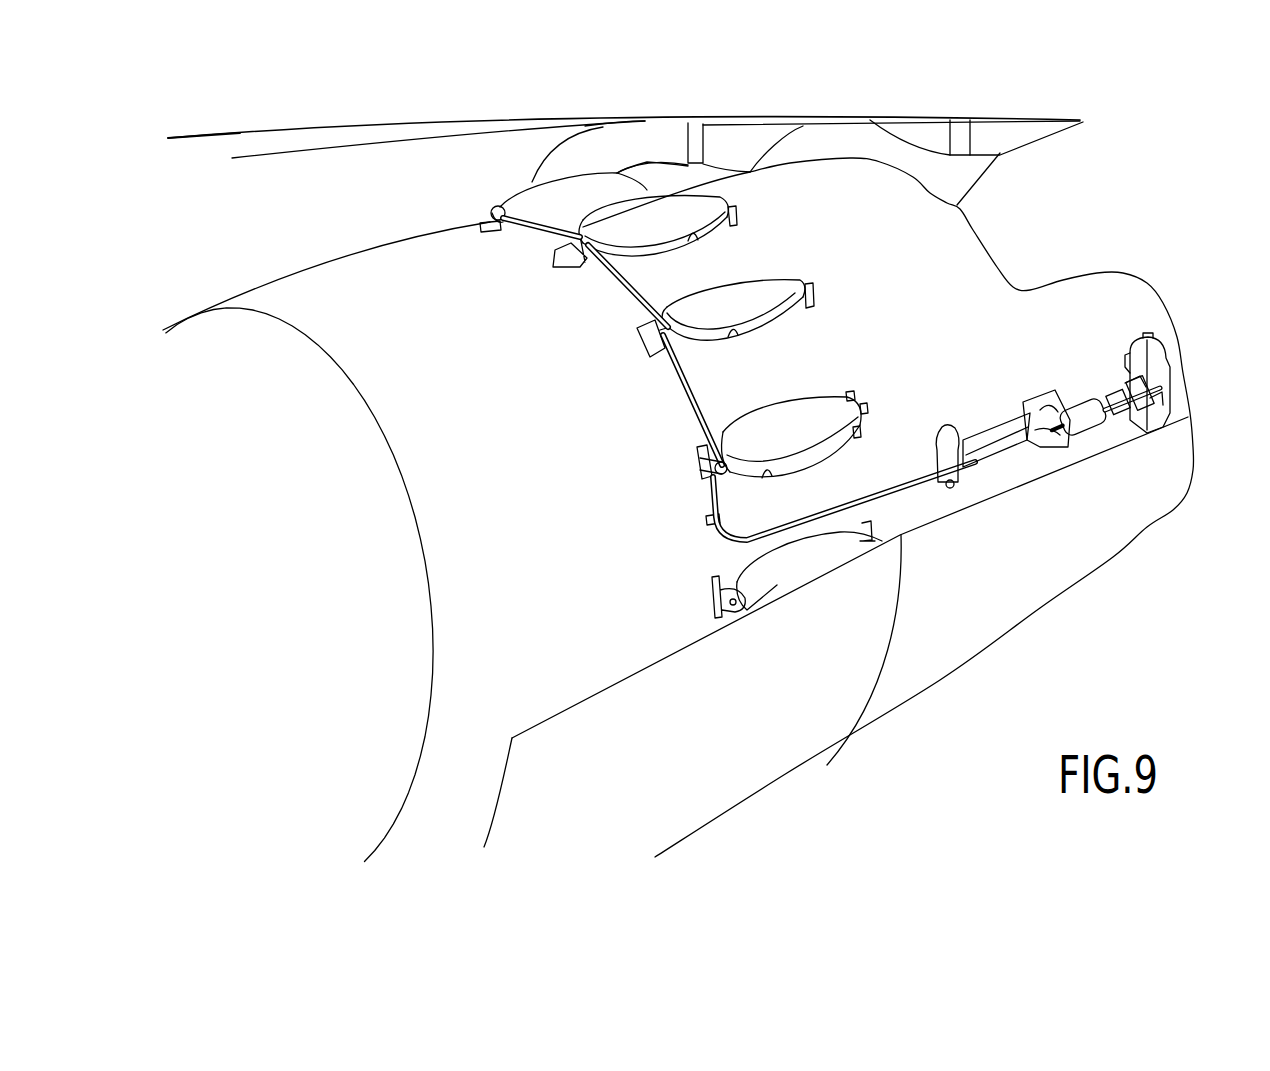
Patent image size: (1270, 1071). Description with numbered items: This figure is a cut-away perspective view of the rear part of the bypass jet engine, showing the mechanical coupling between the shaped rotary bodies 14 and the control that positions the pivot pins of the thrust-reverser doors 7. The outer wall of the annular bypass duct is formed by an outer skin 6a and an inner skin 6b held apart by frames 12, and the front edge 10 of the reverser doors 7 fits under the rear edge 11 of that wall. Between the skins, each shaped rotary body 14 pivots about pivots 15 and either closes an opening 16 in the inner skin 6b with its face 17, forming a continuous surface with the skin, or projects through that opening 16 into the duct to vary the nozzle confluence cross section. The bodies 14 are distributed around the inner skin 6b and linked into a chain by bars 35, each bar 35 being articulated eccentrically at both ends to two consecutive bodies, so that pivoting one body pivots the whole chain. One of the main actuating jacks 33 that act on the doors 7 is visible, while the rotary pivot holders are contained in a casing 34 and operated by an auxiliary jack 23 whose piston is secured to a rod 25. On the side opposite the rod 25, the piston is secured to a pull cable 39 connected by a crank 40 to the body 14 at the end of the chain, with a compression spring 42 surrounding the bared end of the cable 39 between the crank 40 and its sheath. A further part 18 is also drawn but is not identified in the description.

The outer skin 6a is at (314, 137).
The inner skin 6b is at (342, 266).
The thrust-reverser doors 7 is at (1050, 133).
The front edge 10 is at (655, 119).
The rear edge 11 is at (633, 120).
The frames 12 is at (705, 143).
The shaped rotary bodies 14 is at (770, 320).
The pivots 15 is at (815, 294).
The openings 16 is at (700, 240).
The face 17 is at (757, 292).
The hinge bracket 18 is at (505, 230).
The auxiliary jack 23 is at (1086, 422).
The rod 25 is at (1143, 413).
The main actuating jacks 33 is at (985, 445).
The casing 34 is at (1160, 355).
The bars 35 is at (697, 405).
The pull cable 39 is at (900, 492).
The crank 40 is at (700, 476).
The compression spring 42 is at (710, 519).